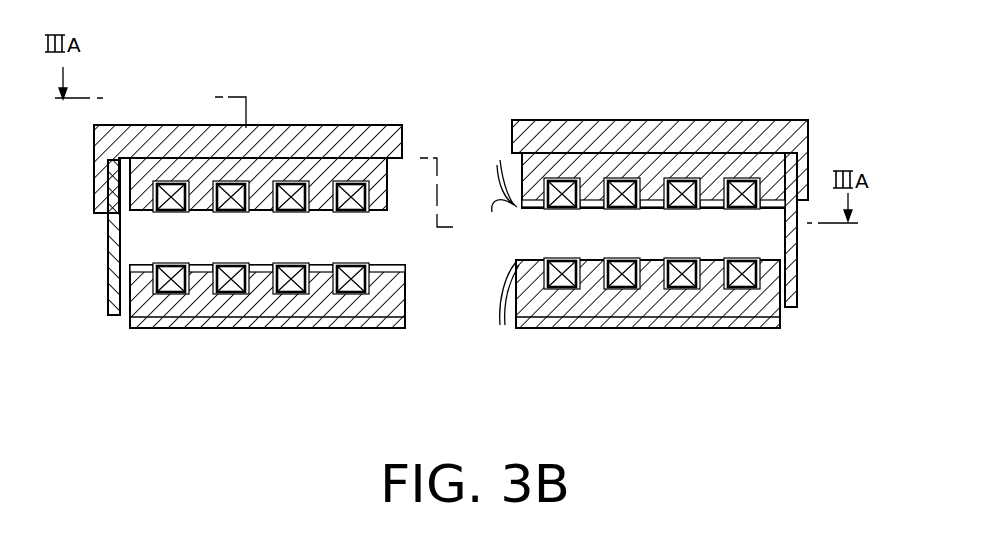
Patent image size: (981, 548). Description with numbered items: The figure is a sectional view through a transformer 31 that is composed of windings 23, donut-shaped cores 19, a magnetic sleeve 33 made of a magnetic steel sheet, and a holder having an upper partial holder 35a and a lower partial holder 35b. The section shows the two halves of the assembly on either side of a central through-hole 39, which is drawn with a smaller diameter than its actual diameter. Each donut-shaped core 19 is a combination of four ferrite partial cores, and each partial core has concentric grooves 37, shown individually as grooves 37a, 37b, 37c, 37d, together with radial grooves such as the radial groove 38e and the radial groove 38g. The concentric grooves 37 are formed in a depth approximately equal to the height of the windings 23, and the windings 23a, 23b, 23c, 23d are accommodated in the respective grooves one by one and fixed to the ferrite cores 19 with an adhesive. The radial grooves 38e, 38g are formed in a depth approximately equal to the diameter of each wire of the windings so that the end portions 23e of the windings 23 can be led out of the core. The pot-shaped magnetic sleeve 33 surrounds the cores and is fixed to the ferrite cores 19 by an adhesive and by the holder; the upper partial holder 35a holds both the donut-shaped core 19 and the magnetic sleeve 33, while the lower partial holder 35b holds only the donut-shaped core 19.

The donut-shaped core 19 is at (157, 170).
The windings 23 is at (352, 184).
The winding 23a is at (562, 262).
The winding 23b is at (622, 262).
The winding 23c is at (682, 262).
The winding 23d is at (742, 262).
The end portions of the windings 23e is at (497, 318).
The transformer 31 is at (506, 72).
The magnetic sleeve 33 is at (107, 258).
The upper partial holder 35a is at (263, 140).
The lower partial holder 35b is at (282, 322).
The concentric grooves 37 is at (586, 326).
The concentric groove 37a is at (560, 329).
The concentric groove 37b is at (620, 329).
The concentric groove 37c is at (678, 329).
The concentric groove 37d is at (736, 326).
The radial groove 38e is at (747, 152).
The radial groove 38g is at (378, 266).
The central through-hole 39 is at (472, 125).